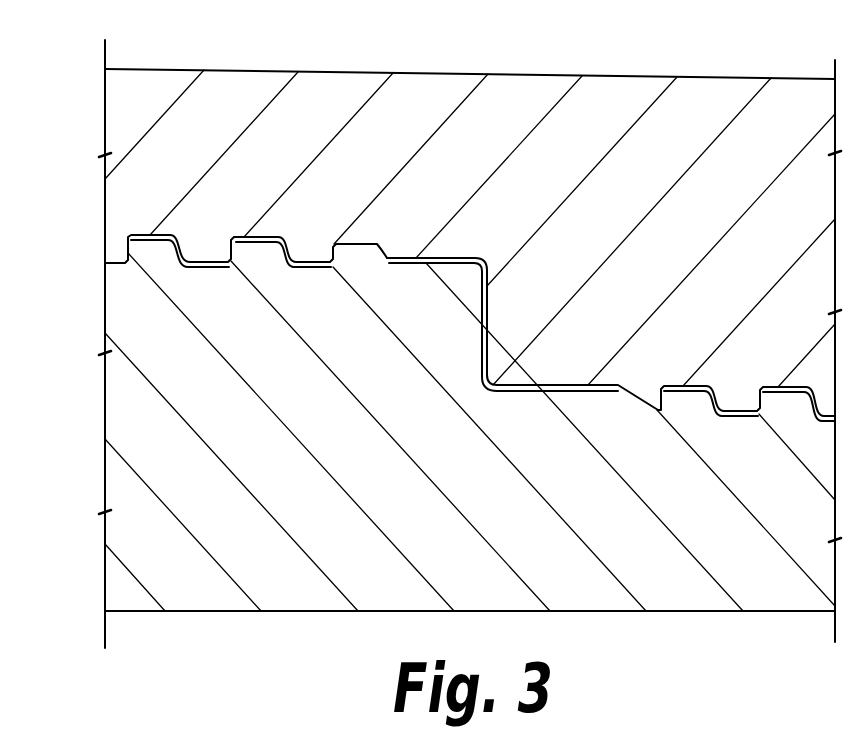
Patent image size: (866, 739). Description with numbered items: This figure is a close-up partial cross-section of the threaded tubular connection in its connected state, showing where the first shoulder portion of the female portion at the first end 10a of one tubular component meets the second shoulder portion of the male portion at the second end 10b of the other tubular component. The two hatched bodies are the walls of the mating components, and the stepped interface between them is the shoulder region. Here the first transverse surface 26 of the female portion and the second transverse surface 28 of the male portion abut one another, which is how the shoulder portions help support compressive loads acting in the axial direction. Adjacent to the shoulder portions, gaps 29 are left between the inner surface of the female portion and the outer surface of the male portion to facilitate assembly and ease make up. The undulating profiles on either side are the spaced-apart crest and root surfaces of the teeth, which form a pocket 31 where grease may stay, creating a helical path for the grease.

The first end 10a is at (517, 92).
The second end 10b is at (665, 592).
The first transverse surface 26 is at (487, 318).
The second transverse surface 28 is at (482, 346).
The gaps 29 is at (426, 259).
The pocket 31 is at (203, 257).